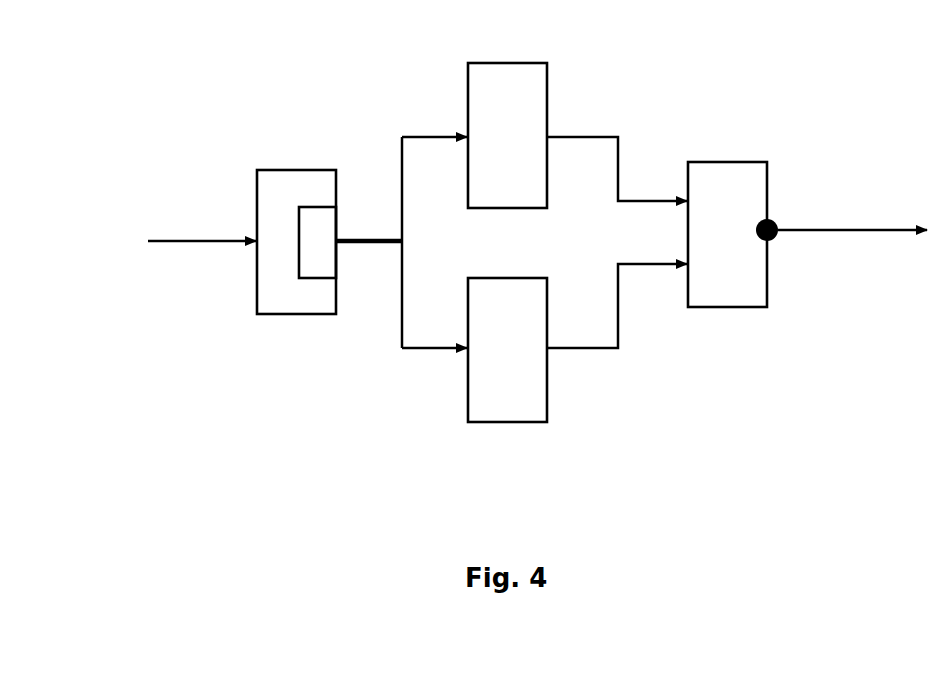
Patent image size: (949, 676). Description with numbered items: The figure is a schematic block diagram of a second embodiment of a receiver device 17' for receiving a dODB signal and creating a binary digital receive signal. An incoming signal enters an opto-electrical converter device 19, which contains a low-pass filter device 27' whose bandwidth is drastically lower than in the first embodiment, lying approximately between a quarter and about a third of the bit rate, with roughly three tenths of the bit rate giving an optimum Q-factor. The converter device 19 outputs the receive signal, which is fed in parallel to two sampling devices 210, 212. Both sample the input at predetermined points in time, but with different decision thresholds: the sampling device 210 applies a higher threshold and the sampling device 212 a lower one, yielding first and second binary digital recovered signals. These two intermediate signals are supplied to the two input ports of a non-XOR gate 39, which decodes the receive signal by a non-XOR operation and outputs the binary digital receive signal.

The receiver device 17' is at (537, 251).
The opto-electrical converter device 19 is at (291, 177).
The low-pass filter device 27' is at (343, 253).
The sampling device 210 is at (514, 70).
The sampling device 212 is at (504, 410).
The non-XOR gate 39 is at (738, 168).